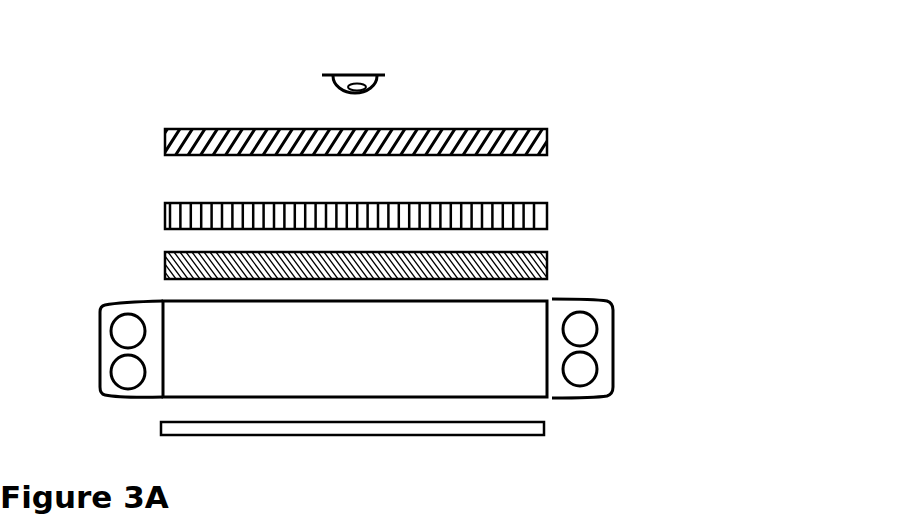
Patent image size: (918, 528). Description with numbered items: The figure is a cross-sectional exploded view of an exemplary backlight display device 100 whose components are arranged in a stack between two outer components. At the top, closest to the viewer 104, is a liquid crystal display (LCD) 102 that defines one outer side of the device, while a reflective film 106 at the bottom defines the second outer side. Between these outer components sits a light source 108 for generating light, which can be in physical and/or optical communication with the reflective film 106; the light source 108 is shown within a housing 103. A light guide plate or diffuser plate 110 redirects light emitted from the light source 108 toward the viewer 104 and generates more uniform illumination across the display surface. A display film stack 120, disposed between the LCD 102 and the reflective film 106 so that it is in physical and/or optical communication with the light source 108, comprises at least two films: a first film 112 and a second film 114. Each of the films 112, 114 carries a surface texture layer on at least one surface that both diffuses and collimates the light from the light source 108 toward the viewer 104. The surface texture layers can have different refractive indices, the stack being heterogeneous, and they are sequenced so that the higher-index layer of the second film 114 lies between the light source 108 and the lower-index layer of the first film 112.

The backlight display device 100 is at (693, 150).
The liquid crystal display (LCD) 102 is at (545, 132).
The housing 103 is at (617, 328).
The viewer 104 is at (366, 75).
The reflective film 106 is at (545, 424).
The light source 108 is at (575, 375).
The light guide plate or diffuser plate 110 is at (526, 297).
The first film 112 is at (540, 194).
The second film 114 is at (545, 263).
The display film stack 120 is at (148, 215).